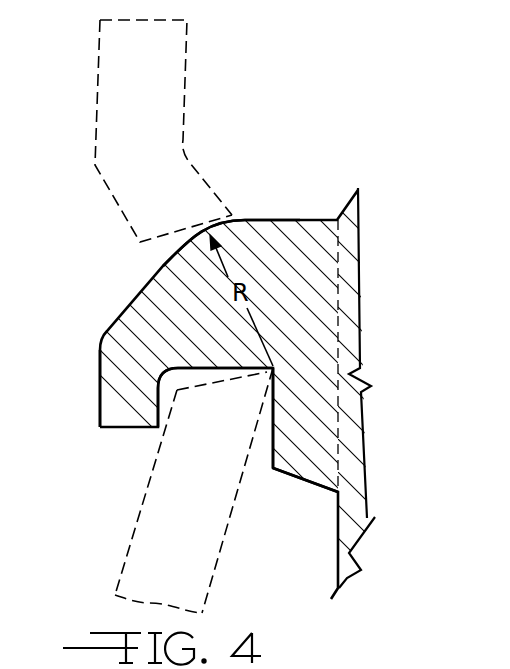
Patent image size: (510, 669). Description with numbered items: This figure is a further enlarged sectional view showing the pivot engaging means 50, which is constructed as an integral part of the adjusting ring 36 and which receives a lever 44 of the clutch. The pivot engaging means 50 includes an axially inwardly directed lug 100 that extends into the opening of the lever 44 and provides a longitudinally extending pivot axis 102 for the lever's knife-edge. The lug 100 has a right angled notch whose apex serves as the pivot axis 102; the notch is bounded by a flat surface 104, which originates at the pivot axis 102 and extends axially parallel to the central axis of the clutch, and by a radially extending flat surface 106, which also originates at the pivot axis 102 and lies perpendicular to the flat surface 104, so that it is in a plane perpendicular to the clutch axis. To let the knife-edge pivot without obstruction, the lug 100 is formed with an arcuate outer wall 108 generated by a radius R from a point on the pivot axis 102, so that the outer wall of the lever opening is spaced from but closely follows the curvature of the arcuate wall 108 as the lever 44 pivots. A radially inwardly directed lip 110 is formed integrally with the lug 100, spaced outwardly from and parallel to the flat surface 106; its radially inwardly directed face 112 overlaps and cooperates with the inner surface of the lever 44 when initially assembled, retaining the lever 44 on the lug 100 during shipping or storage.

The pivot engaging means 50 is at (285, 218).
The adjusting ring 36 is at (349, 513).
The lever 44 is at (135, 518).
The lug 100 is at (237, 241).
The pivot axis 102 is at (271, 374).
The flat surface 104 is at (196, 376).
The radially extending flat surface 106 is at (276, 455).
The arcuate outer wall 108 is at (180, 249).
The lip 110 is at (115, 398).
The radially inwardly directed face 112 is at (173, 402).